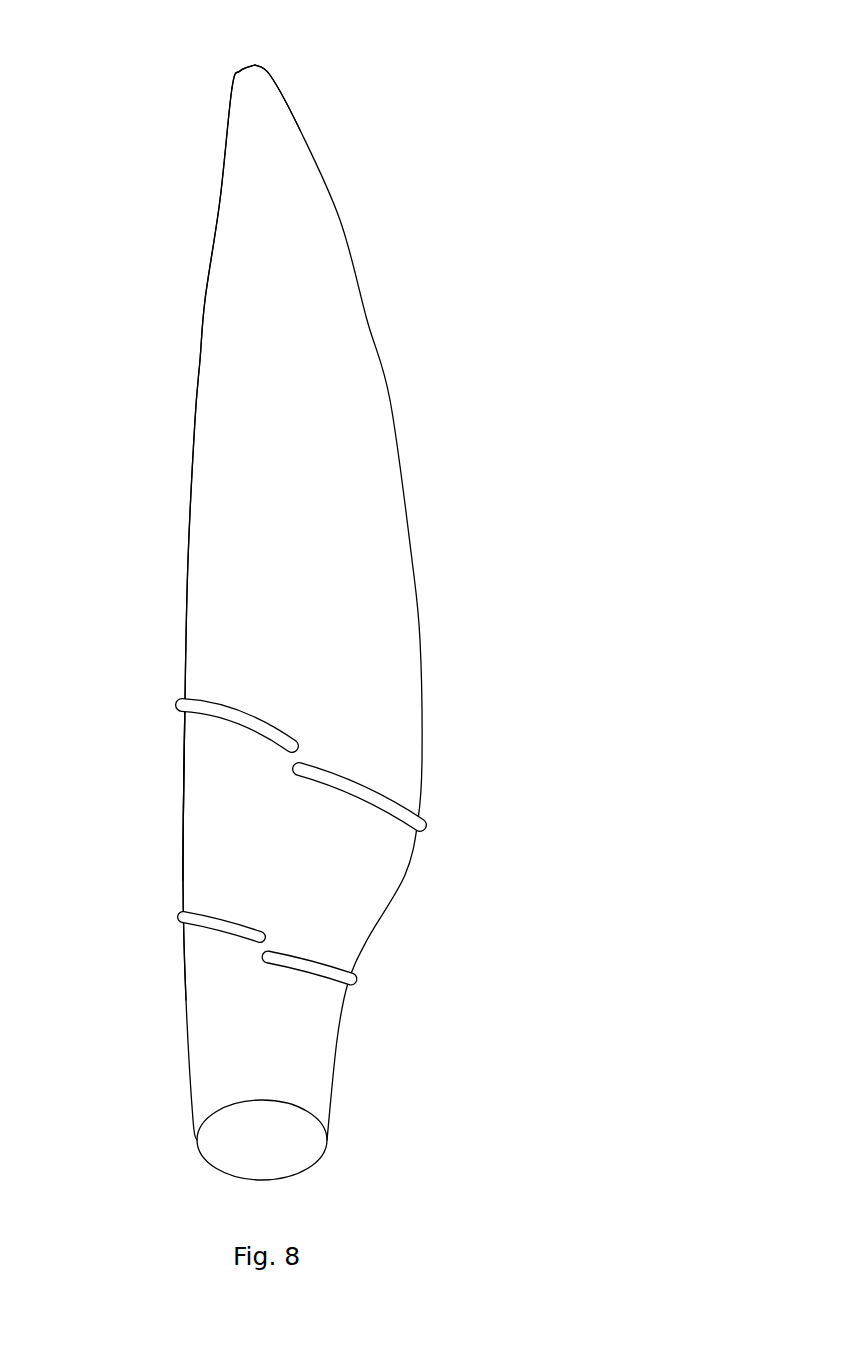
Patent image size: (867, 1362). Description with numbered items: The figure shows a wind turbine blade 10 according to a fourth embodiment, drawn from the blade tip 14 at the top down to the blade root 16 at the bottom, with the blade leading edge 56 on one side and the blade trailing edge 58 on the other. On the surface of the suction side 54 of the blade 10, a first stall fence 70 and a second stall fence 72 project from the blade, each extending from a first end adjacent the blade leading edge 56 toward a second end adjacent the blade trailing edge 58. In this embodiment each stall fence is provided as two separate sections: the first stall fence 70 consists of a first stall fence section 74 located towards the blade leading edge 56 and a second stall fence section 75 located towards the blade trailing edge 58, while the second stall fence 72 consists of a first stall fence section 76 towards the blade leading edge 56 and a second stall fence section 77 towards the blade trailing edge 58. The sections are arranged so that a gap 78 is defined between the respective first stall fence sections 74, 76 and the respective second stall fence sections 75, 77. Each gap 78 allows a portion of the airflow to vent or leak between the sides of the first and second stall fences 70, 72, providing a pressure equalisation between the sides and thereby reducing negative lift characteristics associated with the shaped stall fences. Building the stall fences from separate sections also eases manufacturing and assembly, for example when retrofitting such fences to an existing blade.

The wind turbine blade 10 is at (515, 278).
The blade tip 14 is at (228, 88).
The blade root 16 is at (182, 1169).
The suction side 54 is at (309, 507).
The blade leading edge 56 is at (195, 342).
The blade trailing edge 58 is at (413, 433).
The first stall fence 70 is at (362, 695).
The second stall fence 72 is at (175, 870).
The first stall fence section 74 is at (202, 708).
The second stall fence section 75 is at (395, 802).
The first stall fence section 76 is at (198, 917).
The second stall fence section 77 is at (327, 972).
The gap 78 is at (260, 935).